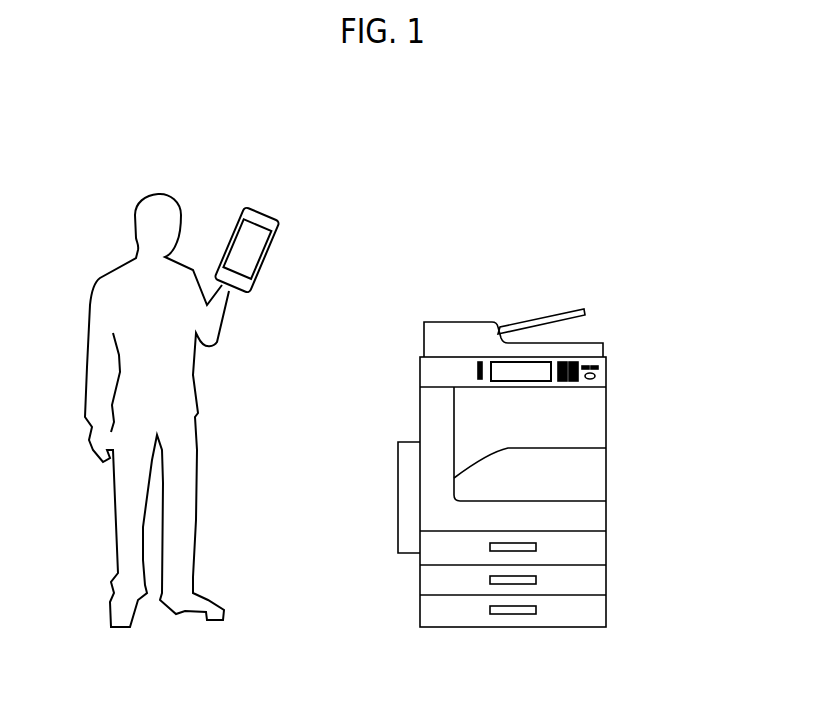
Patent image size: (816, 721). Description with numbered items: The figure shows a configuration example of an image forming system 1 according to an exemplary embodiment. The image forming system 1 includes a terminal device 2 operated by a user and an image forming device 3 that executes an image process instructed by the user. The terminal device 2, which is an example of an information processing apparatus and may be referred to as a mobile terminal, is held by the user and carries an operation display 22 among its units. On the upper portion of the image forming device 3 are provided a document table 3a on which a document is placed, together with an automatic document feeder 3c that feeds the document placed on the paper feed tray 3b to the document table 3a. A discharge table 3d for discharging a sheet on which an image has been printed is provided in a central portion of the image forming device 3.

The image forming system 1 is at (497, 157).
The terminal device 2 is at (268, 229).
The operation display 22 is at (262, 210).
The image forming device 3 is at (518, 445).
The document table 3a is at (443, 357).
The paper feed tray 3b is at (445, 328).
The automatic document feeder 3c is at (548, 315).
The discharge table 3d is at (562, 450).